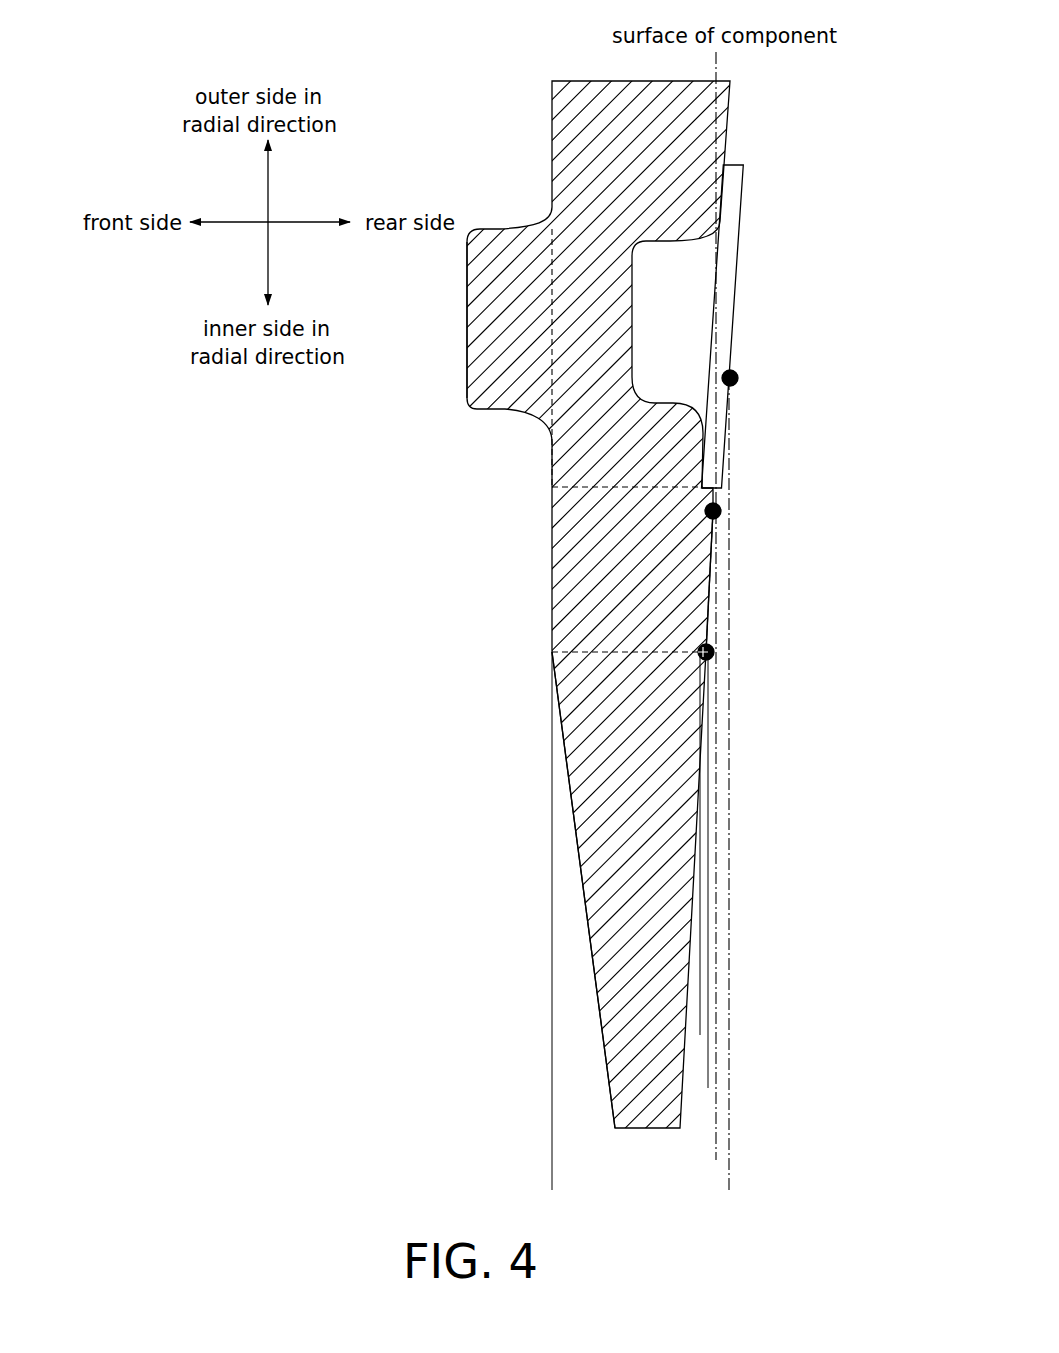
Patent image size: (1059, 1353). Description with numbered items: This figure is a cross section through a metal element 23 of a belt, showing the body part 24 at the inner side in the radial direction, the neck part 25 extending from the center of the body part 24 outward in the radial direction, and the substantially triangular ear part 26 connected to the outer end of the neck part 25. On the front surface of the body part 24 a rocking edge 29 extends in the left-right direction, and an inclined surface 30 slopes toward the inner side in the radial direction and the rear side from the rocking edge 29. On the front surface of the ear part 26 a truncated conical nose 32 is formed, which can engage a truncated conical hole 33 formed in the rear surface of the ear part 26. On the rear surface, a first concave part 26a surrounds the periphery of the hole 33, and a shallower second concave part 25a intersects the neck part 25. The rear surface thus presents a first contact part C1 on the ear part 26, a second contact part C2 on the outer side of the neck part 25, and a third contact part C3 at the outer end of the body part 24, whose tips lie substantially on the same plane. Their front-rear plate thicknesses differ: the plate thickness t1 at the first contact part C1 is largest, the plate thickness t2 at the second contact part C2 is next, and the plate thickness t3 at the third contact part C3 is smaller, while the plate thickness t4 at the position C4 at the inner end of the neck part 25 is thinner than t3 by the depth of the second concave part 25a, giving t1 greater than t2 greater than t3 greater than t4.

The metal element 23 is at (521, 171).
The body part 24 is at (577, 848).
The neck part 25 is at (537, 617).
The second concave part 25a is at (707, 598).
The ear part 26 is at (528, 210).
The first concave part 26a is at (704, 466).
The rocking edge 29 is at (552, 652).
The inclined surface 30 is at (578, 866).
The nose 32 is at (468, 370).
The hole 33 is at (631, 312).
The first contact part C1 is at (738, 376).
The second contact part C2 is at (720, 516).
The third contact part C3 is at (713, 647).
The position C4 is at (698, 650).
The plate thickness t1 is at (728, 1174).
The plate thickness t2 is at (715, 1123).
The plate thickness t3 is at (708, 1076).
The plate thickness t4 is at (552, 1022).